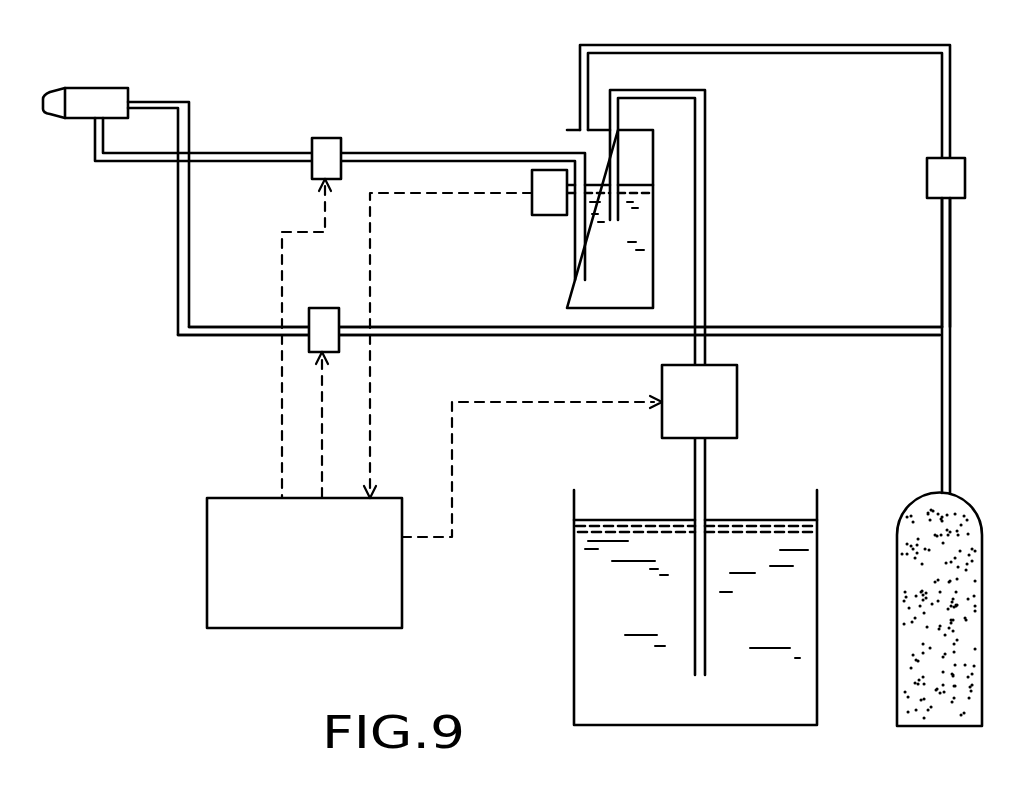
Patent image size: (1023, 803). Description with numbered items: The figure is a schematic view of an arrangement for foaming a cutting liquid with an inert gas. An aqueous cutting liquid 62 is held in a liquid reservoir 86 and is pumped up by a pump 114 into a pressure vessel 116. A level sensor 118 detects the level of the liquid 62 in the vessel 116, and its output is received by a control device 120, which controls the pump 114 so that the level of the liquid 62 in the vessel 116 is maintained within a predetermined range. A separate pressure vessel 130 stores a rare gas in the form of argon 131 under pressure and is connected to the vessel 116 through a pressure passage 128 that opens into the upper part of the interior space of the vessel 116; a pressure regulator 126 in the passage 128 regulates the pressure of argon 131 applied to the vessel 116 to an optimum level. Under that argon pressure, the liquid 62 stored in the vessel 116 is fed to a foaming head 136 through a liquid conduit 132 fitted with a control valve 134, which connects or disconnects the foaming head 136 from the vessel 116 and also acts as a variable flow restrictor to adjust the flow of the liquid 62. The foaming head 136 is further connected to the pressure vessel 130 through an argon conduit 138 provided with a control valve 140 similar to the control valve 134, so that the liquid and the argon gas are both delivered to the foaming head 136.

The aqueous cutting liquid 62 is at (761, 540).
The liquid reservoir 86 is at (573, 588).
The pump 114 is at (673, 410).
The pressure vessel 116 is at (566, 271).
The level sensor 118 is at (533, 203).
The control device 120 is at (212, 533).
The pressure regulator 126 is at (935, 175).
The pressure passage 128 is at (942, 237).
The pressure vessel 130 is at (922, 495).
The argon 131 is at (908, 650).
The liquid conduit 132 is at (463, 155).
The control valve 134 is at (330, 141).
The foaming head 136 is at (85, 110).
The argon conduit 138 is at (443, 326).
The control valve 140 is at (327, 318).